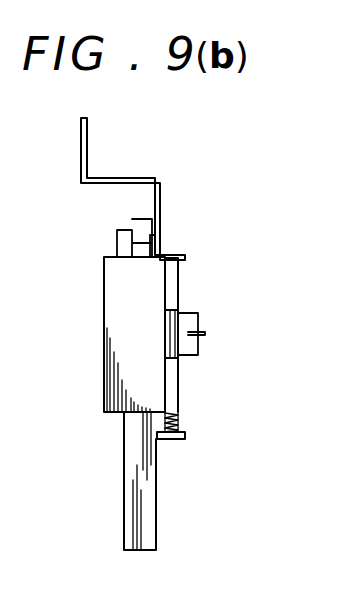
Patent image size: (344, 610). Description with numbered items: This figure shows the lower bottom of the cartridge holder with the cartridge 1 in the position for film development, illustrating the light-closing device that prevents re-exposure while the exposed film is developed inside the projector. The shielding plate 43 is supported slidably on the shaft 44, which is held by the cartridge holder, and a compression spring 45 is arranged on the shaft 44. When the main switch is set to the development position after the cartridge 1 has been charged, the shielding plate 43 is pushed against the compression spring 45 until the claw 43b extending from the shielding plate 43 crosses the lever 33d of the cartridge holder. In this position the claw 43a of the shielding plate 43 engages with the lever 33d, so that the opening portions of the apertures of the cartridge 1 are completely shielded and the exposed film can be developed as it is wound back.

The lever 33d is at (121, 178).
The shielding plate 43 is at (195, 282).
The claw 43a is at (143, 225).
The claw 43b is at (227, 322).
The shaft 44 is at (207, 395).
The compression spring 45 is at (207, 435).
The cartridge 1 is at (187, 518).